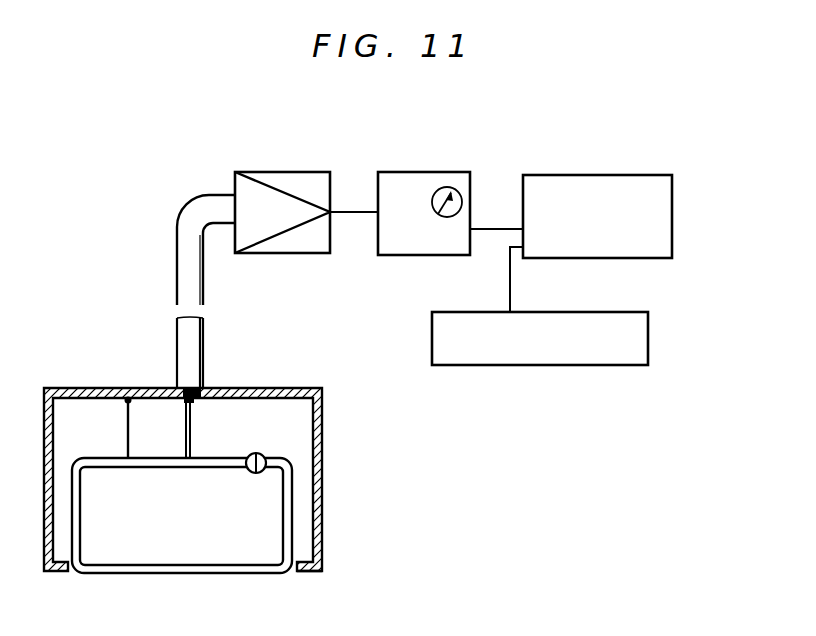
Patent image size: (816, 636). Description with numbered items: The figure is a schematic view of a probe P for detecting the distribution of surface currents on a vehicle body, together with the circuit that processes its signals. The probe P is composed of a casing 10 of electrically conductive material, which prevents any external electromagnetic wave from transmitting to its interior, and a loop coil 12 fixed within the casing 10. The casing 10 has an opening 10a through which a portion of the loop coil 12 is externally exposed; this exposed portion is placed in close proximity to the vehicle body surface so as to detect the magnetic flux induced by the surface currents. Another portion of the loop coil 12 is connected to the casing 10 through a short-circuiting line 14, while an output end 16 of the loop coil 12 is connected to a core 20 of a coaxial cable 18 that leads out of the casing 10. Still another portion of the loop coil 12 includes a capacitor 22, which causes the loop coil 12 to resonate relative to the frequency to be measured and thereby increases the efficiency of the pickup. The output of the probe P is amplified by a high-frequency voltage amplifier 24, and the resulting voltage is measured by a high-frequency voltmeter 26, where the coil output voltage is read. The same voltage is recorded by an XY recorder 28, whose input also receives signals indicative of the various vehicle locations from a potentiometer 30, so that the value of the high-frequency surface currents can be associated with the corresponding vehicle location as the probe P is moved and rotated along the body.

The casing 10 is at (322, 437).
The opening 10a is at (286, 566).
The loop coil 12 is at (292, 497).
The short-circuiting line 14 is at (125, 432).
The output end 16 is at (186, 432).
The coaxial cable 18 is at (198, 356).
The core 20 is at (196, 402).
The capacitor 22 is at (270, 432).
The high-frequency voltage amplifier 24 is at (266, 172).
The high-frequency voltmeter 26 is at (424, 172).
The XY recorder 28 is at (592, 175).
The potentiometer 30 is at (525, 365).
The probe P is at (42, 444).